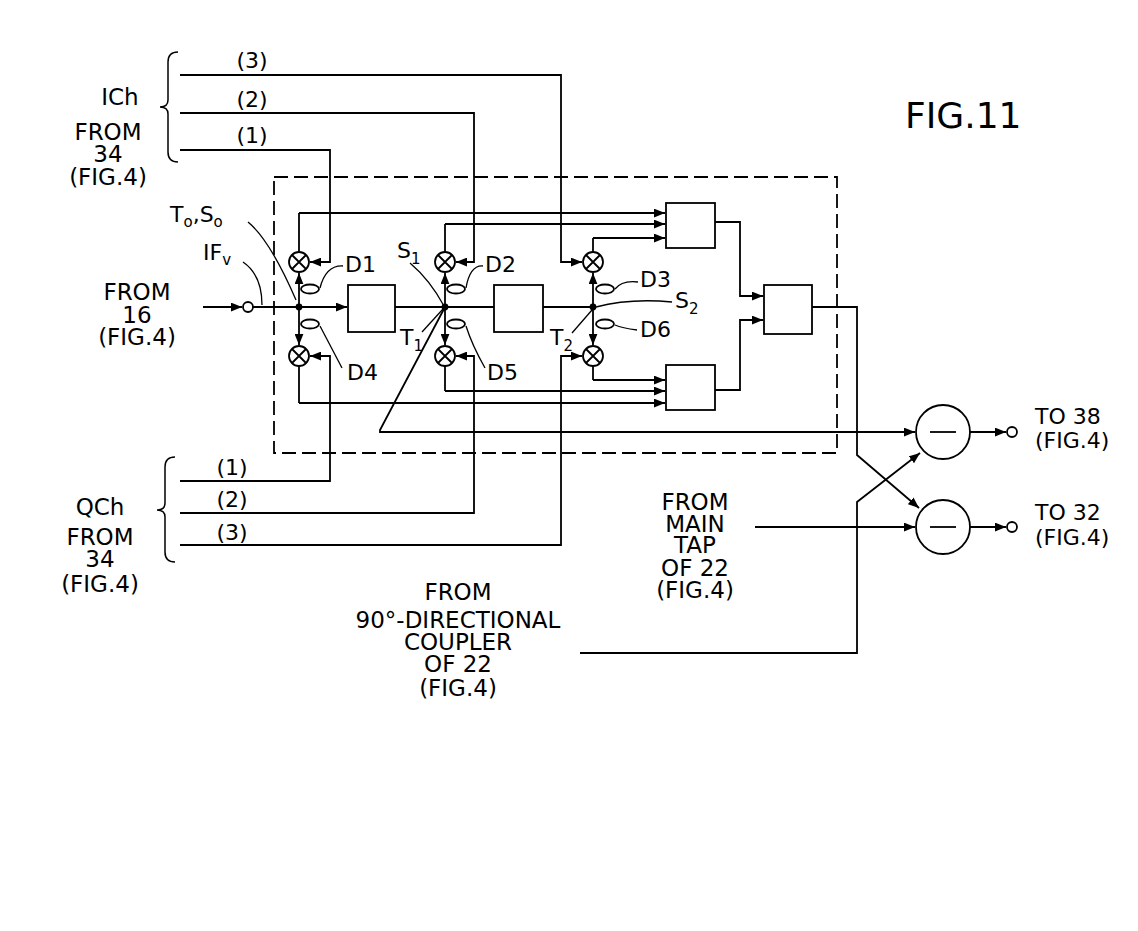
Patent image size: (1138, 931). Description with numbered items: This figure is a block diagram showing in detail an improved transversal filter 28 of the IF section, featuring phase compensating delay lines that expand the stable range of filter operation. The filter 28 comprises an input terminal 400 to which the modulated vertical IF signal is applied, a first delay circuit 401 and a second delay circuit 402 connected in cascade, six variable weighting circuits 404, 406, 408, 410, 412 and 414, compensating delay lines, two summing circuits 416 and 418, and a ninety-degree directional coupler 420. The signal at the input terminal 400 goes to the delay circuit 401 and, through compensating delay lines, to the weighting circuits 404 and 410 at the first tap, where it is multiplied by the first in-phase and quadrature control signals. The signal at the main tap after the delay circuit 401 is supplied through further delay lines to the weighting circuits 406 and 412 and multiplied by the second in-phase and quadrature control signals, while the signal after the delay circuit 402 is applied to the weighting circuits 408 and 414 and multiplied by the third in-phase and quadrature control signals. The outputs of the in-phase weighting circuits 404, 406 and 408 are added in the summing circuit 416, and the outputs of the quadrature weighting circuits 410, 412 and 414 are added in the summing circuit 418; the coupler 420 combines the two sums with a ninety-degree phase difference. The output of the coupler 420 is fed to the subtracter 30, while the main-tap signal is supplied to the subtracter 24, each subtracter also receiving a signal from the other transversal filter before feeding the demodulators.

The transversal filter 28 is at (800, 177).
The input terminal 400 is at (247, 313).
The delay circuit 401 is at (375, 285).
The delay circuit 402 is at (520, 285).
The variable weighting circuit 404 is at (292, 253).
The variable weighting circuit 406 is at (439, 252).
The variable weighting circuit 408 is at (587, 252).
The variable weighting circuit 410 is at (290, 363).
The variable weighting circuit 412 is at (440, 368).
The variable weighting circuit 414 is at (590, 368).
The summing circuit 416 is at (716, 208).
The summing circuit 418 is at (716, 404).
The 90°-directional coupler 420 is at (787, 285).
The subtracter 24 is at (935, 407).
The subtracter 30 is at (942, 554).